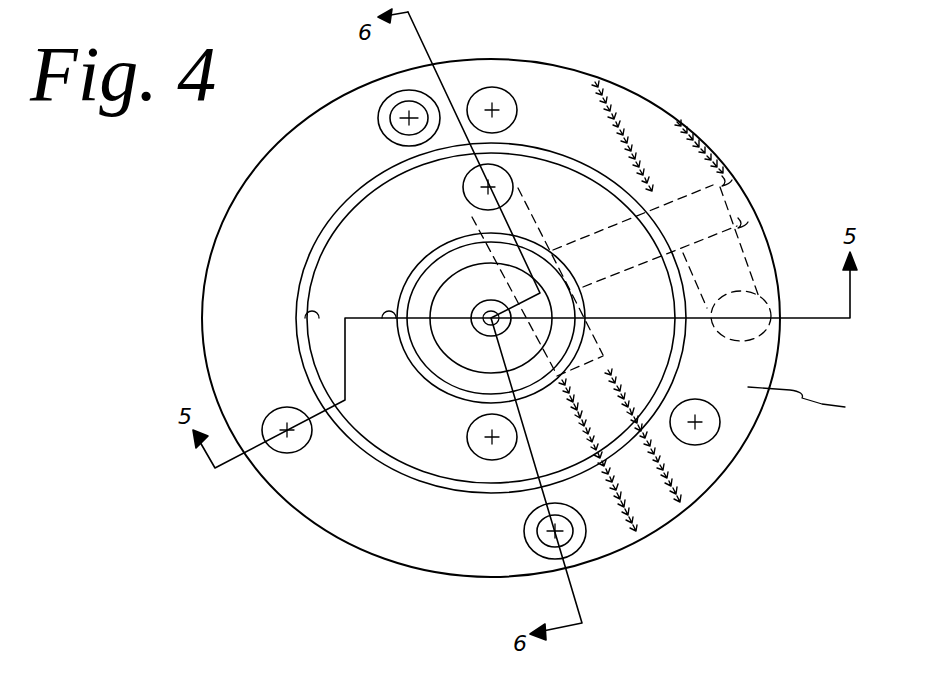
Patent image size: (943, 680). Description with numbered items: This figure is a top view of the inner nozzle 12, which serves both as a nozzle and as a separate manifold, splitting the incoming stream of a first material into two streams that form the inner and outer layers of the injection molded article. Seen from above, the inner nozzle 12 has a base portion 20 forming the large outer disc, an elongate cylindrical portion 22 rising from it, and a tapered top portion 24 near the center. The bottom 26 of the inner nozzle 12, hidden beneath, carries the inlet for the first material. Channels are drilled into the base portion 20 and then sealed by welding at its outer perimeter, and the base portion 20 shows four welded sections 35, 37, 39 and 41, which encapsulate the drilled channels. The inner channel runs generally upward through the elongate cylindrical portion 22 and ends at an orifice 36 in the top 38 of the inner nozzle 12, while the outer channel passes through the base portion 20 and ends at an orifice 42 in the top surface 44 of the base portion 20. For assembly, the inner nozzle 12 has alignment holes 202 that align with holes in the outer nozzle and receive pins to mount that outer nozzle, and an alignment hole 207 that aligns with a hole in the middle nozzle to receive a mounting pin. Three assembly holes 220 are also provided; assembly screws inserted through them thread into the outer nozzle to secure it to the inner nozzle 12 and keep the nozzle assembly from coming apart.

The inner nozzle 12 is at (720, 155).
The base portion 20 is at (811, 404).
The elongate cylindrical portion 22 is at (427, 388).
The tapered top portion 24 is at (453, 298).
The bottom 26 is at (807, 10).
The welded section 35 is at (576, 265).
The orifice 36 is at (483, 302).
The welded section 37 is at (650, 138).
The top 38 is at (491, 320).
The welded section 39 is at (753, 188).
The welded section 41 is at (640, 483).
The orifice 42 is at (488, 188).
The top surface 44 is at (678, 468).
The alignment holes 202 is at (390, 118).
The alignment hole 207 is at (492, 437).
The assembly holes 220 is at (492, 110).